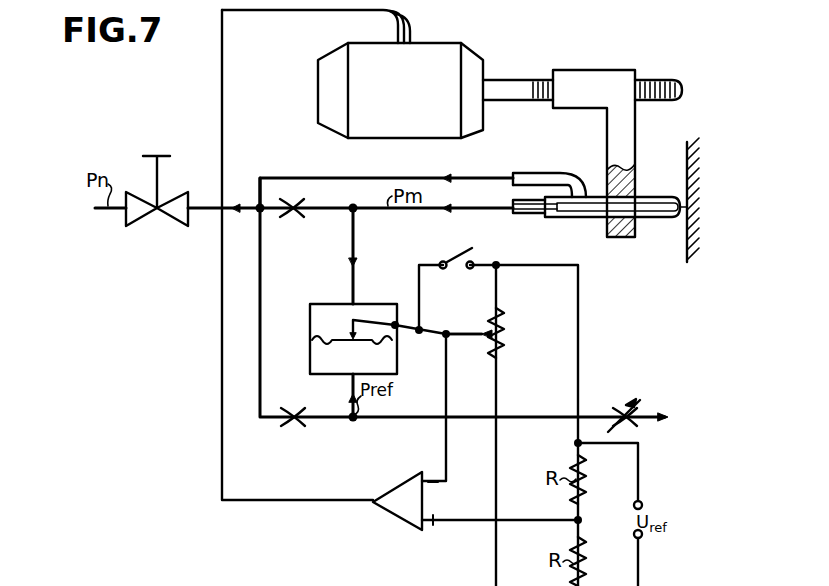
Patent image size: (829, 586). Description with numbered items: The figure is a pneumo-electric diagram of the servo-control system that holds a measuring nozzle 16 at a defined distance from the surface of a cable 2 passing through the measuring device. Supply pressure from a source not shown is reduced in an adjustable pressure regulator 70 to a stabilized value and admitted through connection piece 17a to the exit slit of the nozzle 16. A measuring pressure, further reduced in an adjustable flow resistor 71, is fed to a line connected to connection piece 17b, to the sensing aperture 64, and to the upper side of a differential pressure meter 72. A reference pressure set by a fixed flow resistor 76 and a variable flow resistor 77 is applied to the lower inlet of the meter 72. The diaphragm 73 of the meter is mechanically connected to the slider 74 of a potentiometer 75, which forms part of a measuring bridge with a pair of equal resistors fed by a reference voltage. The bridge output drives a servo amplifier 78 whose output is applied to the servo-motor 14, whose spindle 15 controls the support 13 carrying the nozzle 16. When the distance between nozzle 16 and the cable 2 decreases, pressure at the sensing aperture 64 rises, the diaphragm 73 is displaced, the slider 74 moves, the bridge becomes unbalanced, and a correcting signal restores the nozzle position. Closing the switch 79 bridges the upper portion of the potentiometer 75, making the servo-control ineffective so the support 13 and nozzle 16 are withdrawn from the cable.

The cable 2 is at (692, 258).
The support 13 is at (622, 146).
The servo-motor 14 is at (428, 53).
The spindle 15 is at (662, 80).
The measuring nozzle 16 is at (672, 220).
The connection piece 17a is at (560, 174).
The connection piece 17b is at (568, 216).
The sensing aperture 64 is at (689, 208).
The adjustable pressure regulator 70 is at (177, 210).
The adjustable flow resistor 71 is at (291, 204).
The differential pressure meter 72 is at (310, 325).
The diaphragm 73 is at (340, 341).
The slider 74 is at (463, 306).
The potentiometer 75 is at (503, 337).
The fixed flow resistor 76 is at (297, 427).
The variable flow resistor 77 is at (622, 410).
The servo amplifier 78 is at (398, 505).
The switch 79 is at (458, 261).